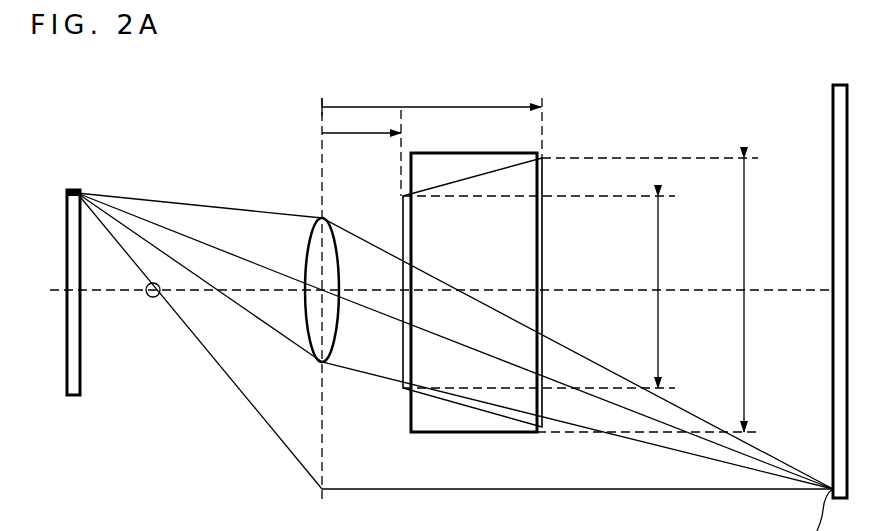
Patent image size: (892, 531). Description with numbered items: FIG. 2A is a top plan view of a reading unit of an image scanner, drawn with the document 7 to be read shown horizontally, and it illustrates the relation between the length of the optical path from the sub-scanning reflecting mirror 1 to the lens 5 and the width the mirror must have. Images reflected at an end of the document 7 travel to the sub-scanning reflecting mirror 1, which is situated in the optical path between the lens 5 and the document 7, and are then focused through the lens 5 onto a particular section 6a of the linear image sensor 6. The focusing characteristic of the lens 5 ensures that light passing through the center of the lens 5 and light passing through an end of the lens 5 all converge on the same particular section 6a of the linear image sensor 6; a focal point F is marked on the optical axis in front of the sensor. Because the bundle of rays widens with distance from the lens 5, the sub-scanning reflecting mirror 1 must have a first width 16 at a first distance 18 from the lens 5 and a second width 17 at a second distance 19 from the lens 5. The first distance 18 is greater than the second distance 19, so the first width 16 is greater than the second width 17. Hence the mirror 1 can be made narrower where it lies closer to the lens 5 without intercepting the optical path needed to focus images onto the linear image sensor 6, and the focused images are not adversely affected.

The sub-scanning reflecting mirror 1 is at (546, 152).
The lens 5 is at (308, 240).
The linear image sensor 6 is at (80, 357).
The particular section of the linear image sensor 6a is at (70, 185).
The focal point F is at (143, 305).
The document to be read 7 is at (833, 117).
The first width 16 is at (744, 230).
The second width 17 is at (658, 250).
The first distance 18 is at (421, 107).
The second distance 19 is at (352, 133).